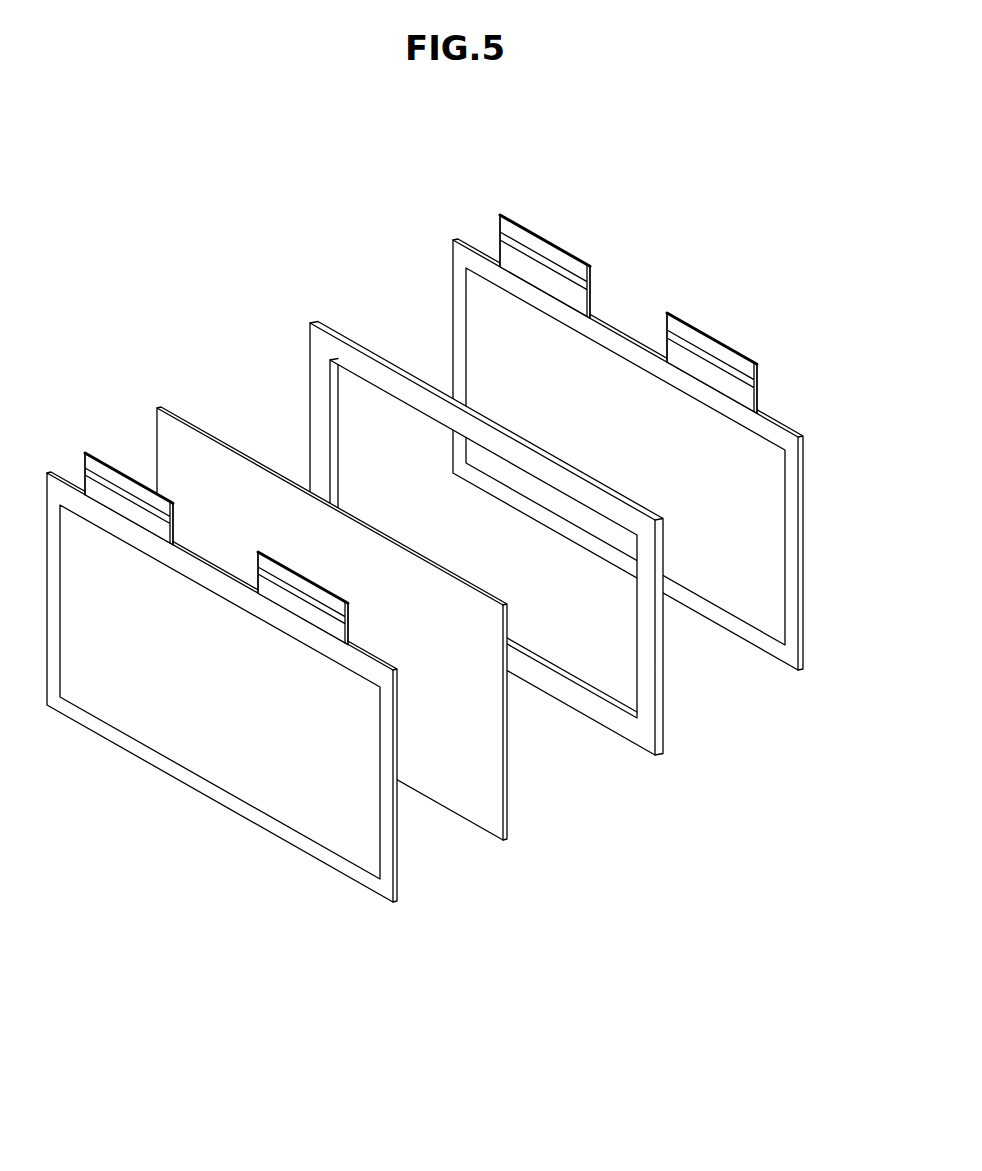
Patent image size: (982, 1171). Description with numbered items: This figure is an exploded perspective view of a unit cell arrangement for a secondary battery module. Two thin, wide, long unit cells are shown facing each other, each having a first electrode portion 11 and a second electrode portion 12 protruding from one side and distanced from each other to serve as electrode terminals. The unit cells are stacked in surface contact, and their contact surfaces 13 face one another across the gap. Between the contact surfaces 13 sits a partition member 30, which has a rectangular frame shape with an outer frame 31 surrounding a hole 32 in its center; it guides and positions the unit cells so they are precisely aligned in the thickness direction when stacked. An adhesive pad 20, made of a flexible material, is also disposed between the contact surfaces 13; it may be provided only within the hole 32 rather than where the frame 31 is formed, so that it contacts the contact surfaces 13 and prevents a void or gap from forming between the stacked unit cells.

The first electrode portion 11 is at (717, 352).
The second electrode portion 12 is at (535, 236).
The contact surface 13 is at (253, 793).
The adhesive pad 20 is at (517, 848).
The partition member 30 is at (528, 588).
The outer frame 31 is at (643, 662).
The hole 32 is at (573, 621).